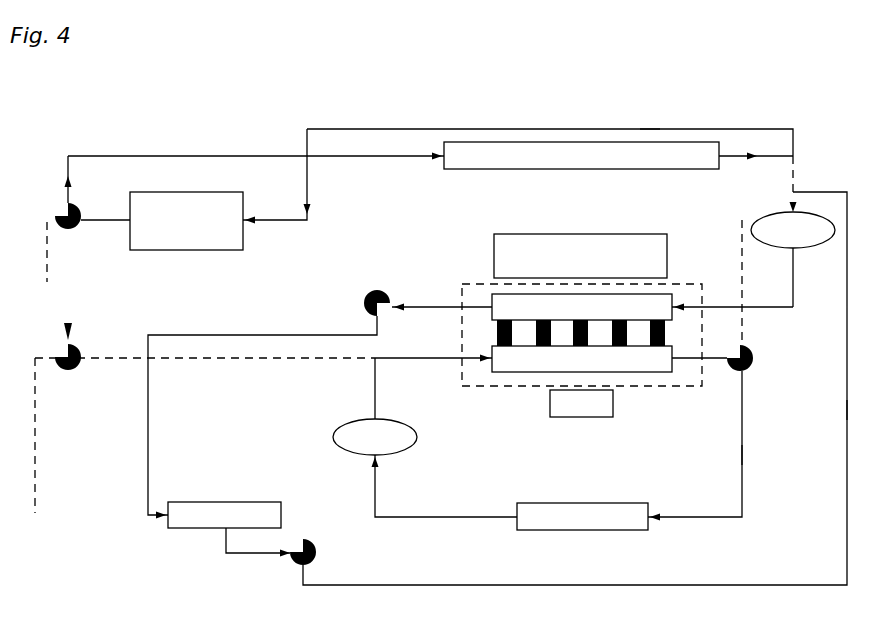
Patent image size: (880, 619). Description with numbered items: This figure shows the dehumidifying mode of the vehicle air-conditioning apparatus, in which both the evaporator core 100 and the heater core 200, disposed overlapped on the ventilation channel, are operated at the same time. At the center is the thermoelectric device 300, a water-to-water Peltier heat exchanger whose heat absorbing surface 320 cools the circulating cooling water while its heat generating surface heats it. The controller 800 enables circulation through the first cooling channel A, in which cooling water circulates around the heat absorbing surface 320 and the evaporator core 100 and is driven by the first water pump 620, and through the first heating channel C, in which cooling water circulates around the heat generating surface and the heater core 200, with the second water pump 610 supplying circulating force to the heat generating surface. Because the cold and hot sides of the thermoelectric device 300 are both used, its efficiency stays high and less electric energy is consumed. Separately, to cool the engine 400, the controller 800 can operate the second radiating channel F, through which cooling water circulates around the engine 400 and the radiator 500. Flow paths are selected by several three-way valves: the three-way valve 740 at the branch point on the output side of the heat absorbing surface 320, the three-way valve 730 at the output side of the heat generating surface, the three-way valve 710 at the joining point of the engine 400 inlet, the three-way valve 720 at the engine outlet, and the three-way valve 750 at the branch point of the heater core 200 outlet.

The evaporator core 100 is at (582, 502).
The heater core 200 is at (226, 500).
The thermoelectric device 300 is at (483, 390).
The heat absorbing surface 320 is at (662, 372).
The engine 400 is at (186, 252).
The radiator 500 is at (578, 142).
The second water pump 610 is at (815, 215).
The first water pump 620 is at (417, 440).
The 3-way valve 710 is at (67, 203).
The 3-way valve 720 is at (60, 345).
The 3-way valve 730 is at (380, 290).
The 3-way valve 740 is at (752, 345).
The 3-way valve 750 is at (292, 562).
The controller 800 is at (550, 400).
The second radiating channel F is at (640, 129).
The first cooling channel A is at (742, 456).
The first heating channel C is at (847, 411).